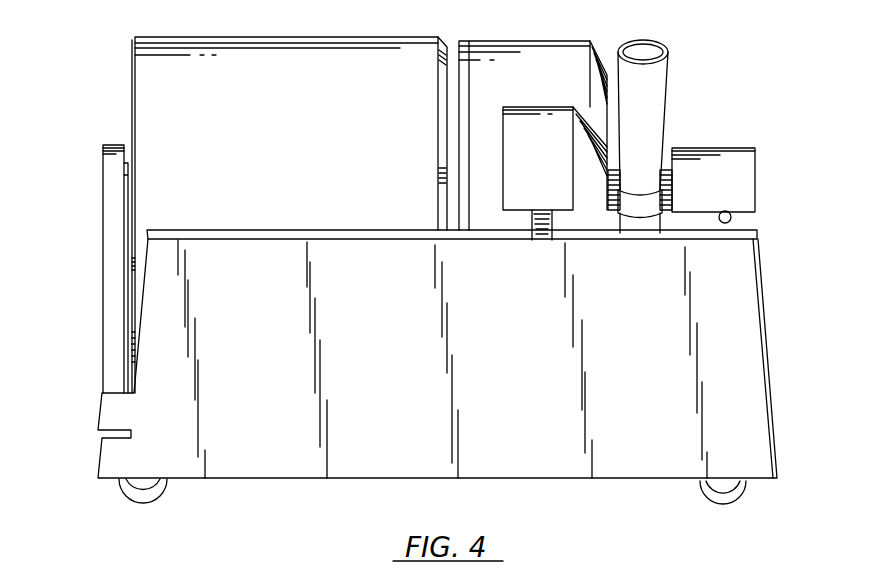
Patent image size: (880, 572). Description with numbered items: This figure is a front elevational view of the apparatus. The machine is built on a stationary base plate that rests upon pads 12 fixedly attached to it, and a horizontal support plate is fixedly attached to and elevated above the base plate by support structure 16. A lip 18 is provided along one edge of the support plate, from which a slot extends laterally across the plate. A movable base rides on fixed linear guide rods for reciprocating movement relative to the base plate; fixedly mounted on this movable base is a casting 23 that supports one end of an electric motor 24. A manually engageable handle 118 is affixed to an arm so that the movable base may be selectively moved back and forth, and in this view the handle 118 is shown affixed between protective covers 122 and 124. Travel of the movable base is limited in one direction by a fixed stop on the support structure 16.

The pads 12 is at (165, 490).
The support structure 16 is at (753, 360).
The lip 18 is at (386, 232).
The casting 23 is at (112, 230).
The electric motor 24 is at (238, 67).
The manually engageable handle 118 is at (652, 78).
The protective cover 122 is at (545, 125).
The protective cover 124 is at (722, 156).